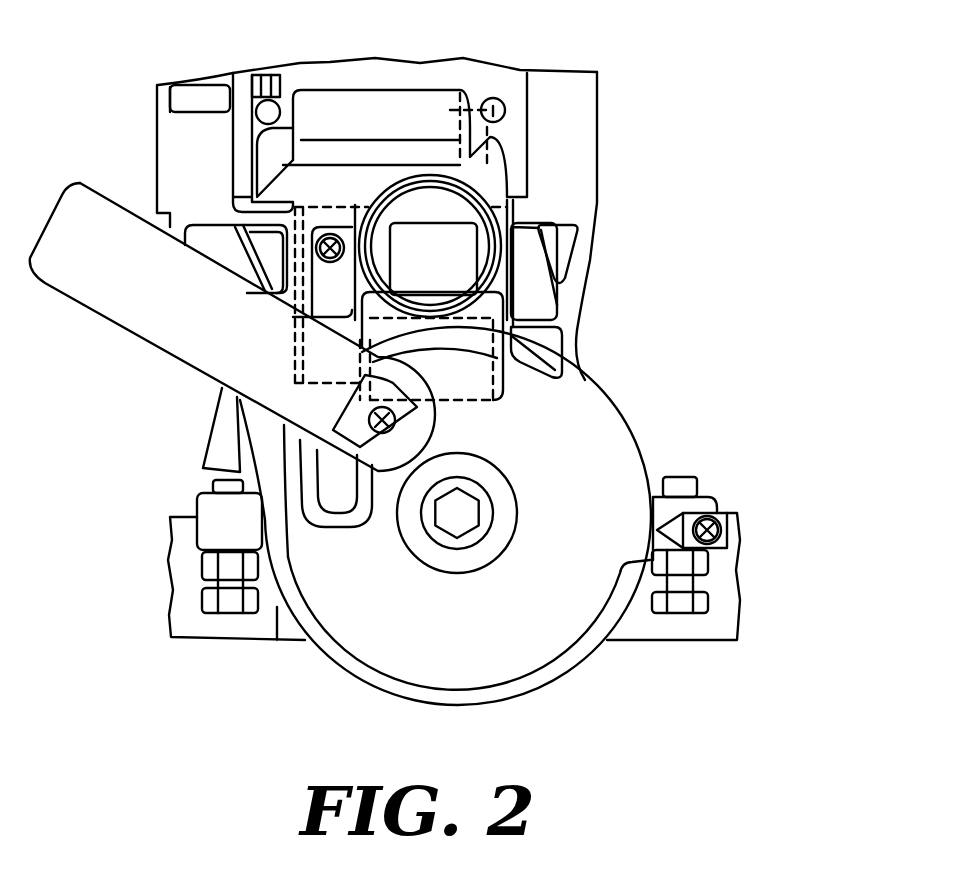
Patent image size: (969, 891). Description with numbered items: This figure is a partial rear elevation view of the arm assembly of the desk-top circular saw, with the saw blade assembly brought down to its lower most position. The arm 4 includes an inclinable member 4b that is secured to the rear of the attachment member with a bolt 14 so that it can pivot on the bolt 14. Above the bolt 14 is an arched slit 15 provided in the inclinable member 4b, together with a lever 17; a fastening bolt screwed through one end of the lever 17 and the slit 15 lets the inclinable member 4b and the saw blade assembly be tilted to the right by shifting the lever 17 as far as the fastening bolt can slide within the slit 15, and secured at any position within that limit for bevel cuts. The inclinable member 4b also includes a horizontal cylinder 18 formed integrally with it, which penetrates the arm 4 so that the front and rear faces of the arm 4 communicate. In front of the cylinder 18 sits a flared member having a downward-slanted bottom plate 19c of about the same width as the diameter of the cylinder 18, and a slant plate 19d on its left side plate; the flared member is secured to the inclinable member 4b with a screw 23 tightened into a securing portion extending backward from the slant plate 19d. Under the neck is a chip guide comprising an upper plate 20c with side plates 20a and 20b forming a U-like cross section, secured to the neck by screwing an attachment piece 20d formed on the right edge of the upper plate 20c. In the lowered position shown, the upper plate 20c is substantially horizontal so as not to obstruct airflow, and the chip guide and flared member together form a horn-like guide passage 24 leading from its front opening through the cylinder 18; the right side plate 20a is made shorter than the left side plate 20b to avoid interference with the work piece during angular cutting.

The arm 4 is at (593, 373).
The inclinable member 4b is at (602, 425).
The bolt 14 is at (470, 533).
The arched slit 15 is at (337, 497).
The lever 17 is at (130, 297).
The horizontal cylinder 18 is at (438, 252).
The bottom plate 19c is at (490, 403).
The slant plate 19d is at (298, 313).
The side plate 20a is at (485, 265).
The side plate 20b is at (373, 201).
The upper plate 20c is at (427, 203).
The attachment piece 20d is at (460, 93).
The screw 23 is at (343, 262).
The horn-like guide passage 24 is at (487, 190).